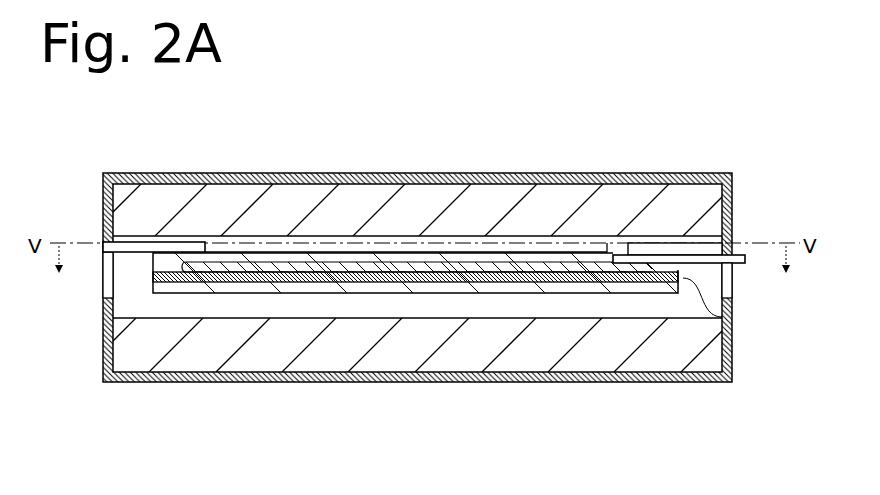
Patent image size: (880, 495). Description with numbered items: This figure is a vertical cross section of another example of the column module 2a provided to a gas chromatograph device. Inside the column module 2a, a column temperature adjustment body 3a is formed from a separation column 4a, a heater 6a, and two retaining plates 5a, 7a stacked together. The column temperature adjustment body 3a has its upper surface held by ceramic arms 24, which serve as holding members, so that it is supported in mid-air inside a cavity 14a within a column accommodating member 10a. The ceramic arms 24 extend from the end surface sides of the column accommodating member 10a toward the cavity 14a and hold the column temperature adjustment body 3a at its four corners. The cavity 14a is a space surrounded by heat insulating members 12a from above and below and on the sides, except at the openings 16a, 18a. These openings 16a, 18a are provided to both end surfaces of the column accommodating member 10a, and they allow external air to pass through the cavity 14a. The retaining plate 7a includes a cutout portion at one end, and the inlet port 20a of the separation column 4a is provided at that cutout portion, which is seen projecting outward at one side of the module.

The column module 2a is at (446, 241).
The column temperature adjustment body 3a is at (732, 327).
The separation column 4a is at (418, 266).
The retaining plate 5a is at (524, 285).
The heater 6a is at (432, 278).
The retaining plate 7a is at (452, 268).
The column accommodating member 10a is at (585, 174).
The heat insulating member 12a is at (478, 202).
The cavity 14a is at (312, 305).
The opening 16a is at (108, 283).
The opening 18a is at (727, 282).
The inlet port 20a is at (739, 255).
The ceramic arm 24 is at (660, 250).